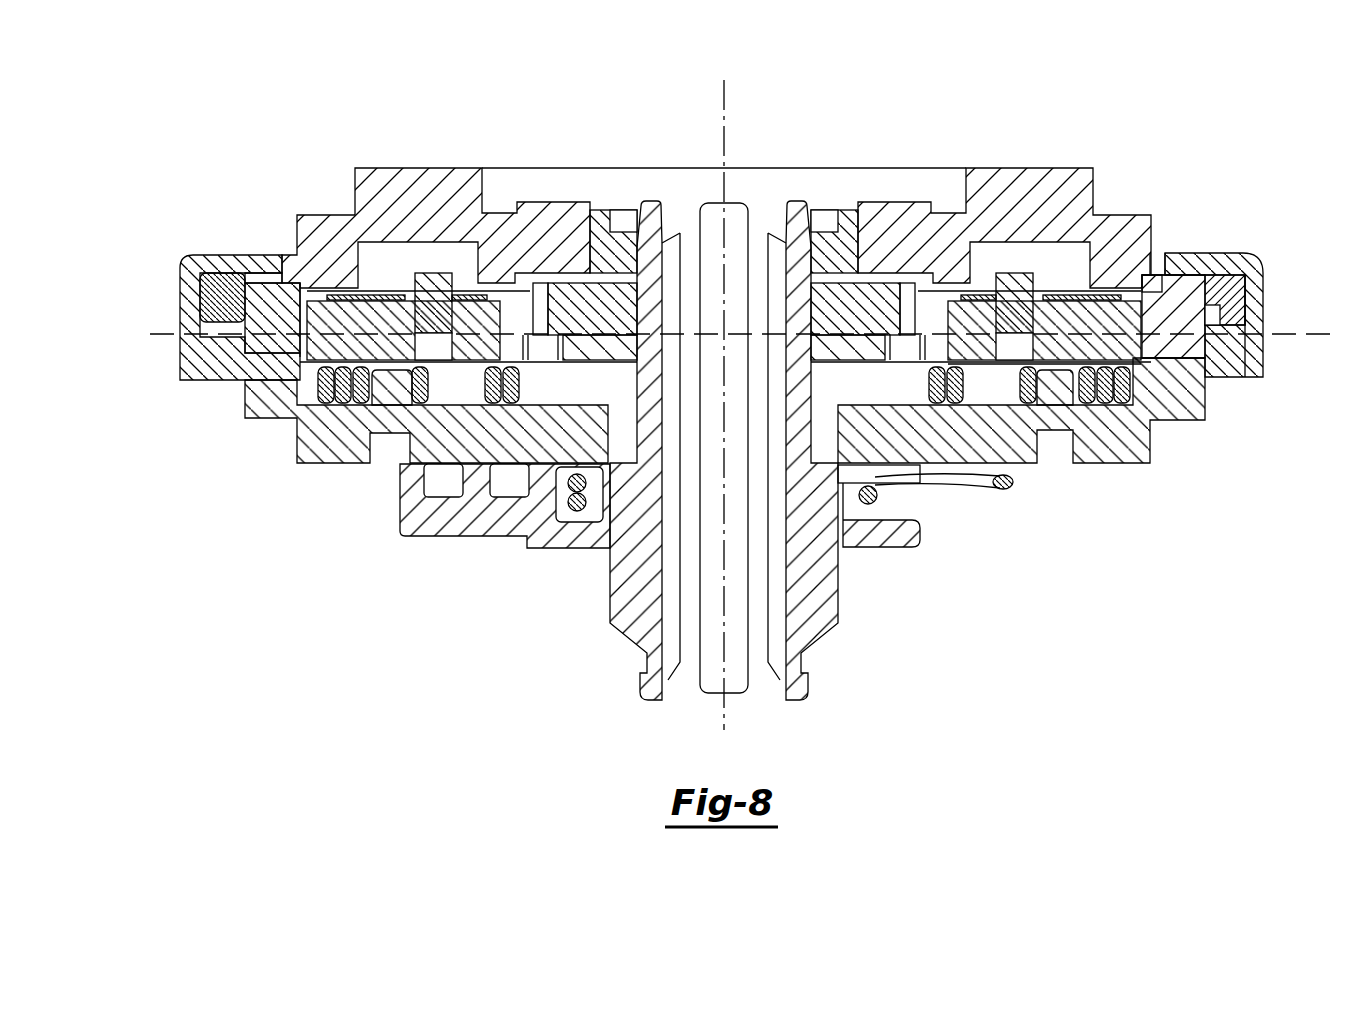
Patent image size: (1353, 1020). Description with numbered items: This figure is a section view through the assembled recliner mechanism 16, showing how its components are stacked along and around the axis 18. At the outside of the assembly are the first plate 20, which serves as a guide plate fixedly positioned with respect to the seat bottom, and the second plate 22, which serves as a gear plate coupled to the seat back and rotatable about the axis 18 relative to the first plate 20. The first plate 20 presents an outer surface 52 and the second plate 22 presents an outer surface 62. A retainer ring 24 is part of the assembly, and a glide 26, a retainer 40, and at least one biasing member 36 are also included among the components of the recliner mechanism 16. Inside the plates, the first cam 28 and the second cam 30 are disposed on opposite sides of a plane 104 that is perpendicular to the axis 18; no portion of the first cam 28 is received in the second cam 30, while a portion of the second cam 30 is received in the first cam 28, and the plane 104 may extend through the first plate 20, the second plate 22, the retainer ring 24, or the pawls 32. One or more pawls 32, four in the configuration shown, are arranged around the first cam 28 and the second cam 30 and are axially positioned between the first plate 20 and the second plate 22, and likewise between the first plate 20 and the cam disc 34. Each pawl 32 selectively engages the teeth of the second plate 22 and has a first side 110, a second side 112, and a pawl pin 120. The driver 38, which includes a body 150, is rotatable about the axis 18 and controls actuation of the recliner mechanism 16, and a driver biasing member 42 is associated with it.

The recliner mechanism 16 is at (463, 127).
The axis 18 is at (726, 84).
The first plate 20 is at (245, 418).
The second plate 22 is at (362, 168).
The retainer ring 24 is at (218, 252).
The glide 26 is at (220, 312).
The first cam 28 is at (607, 355).
The second cam 30 is at (557, 277).
The pawl 32 is at (318, 306).
The cam disc 34 is at (1107, 310).
The biasing member 36 is at (318, 377).
The driver 38 is at (610, 622).
The retainer 40 is at (594, 237).
The driver biasing member 42 is at (1010, 485).
The outer surface 52 is at (1248, 353).
The outer surface 62 is at (1245, 290).
The plane 104 is at (136, 334).
The first side 110 is at (1070, 360).
The second side 112 is at (1153, 283).
The pawl pin 120 is at (437, 273).
The body 150 is at (403, 519).